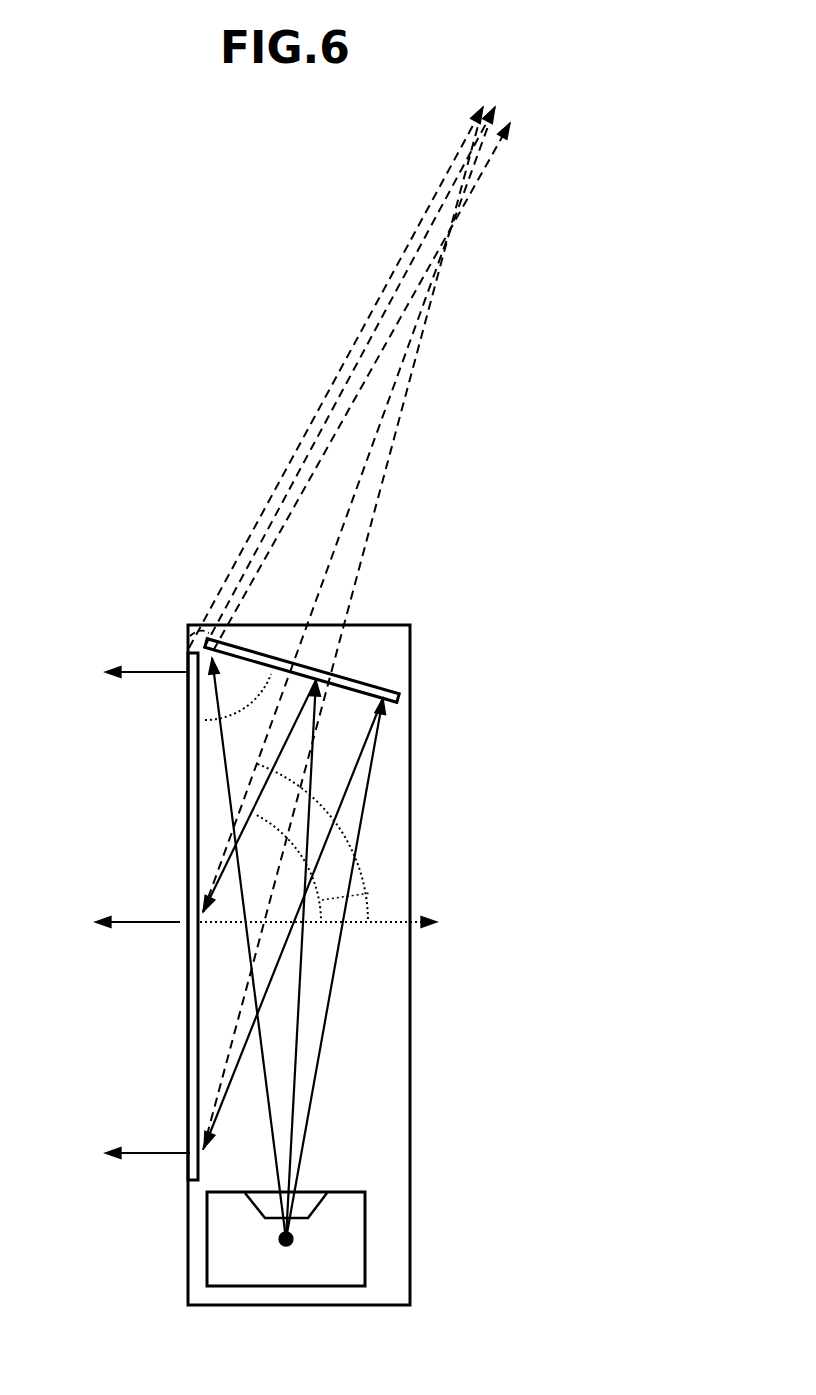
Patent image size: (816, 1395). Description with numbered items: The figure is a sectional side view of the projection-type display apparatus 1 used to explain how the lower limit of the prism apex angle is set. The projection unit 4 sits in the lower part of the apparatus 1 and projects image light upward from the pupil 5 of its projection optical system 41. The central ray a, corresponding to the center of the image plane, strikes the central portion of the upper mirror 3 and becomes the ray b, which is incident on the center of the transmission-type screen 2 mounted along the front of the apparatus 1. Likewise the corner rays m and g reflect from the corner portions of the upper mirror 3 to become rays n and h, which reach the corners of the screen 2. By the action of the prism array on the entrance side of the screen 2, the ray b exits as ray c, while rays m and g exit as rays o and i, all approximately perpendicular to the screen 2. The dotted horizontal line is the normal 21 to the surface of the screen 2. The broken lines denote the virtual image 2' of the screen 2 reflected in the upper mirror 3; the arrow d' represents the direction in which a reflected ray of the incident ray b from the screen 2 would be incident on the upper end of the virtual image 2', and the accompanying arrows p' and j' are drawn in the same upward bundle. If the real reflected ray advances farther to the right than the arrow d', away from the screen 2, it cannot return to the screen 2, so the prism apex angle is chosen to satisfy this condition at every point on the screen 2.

The projection-type display apparatus 1 is at (393, 1110).
The screen 2 is at (149, 916).
The upper mirror 3 is at (376, 686).
The projection unit 4 is at (350, 1265).
The projection optical system 41 is at (305, 1202).
The pupil 5 is at (287, 1246).
The normal to the surface of the screen 21 is at (378, 920).
The virtual image of the screen 2' is at (342, 377).
The central ray a is at (305, 978).
The ray b is at (260, 793).
The ray c is at (162, 922).
The ray g is at (330, 1045).
The ray h is at (235, 1067).
The ray i is at (162, 1153).
The ray m is at (212, 692).
The ray n is at (185, 637).
The ray o is at (152, 672).
The light ray p' is at (361, 387).
The arrow d' is at (349, 509).
The light ray j' is at (343, 628).